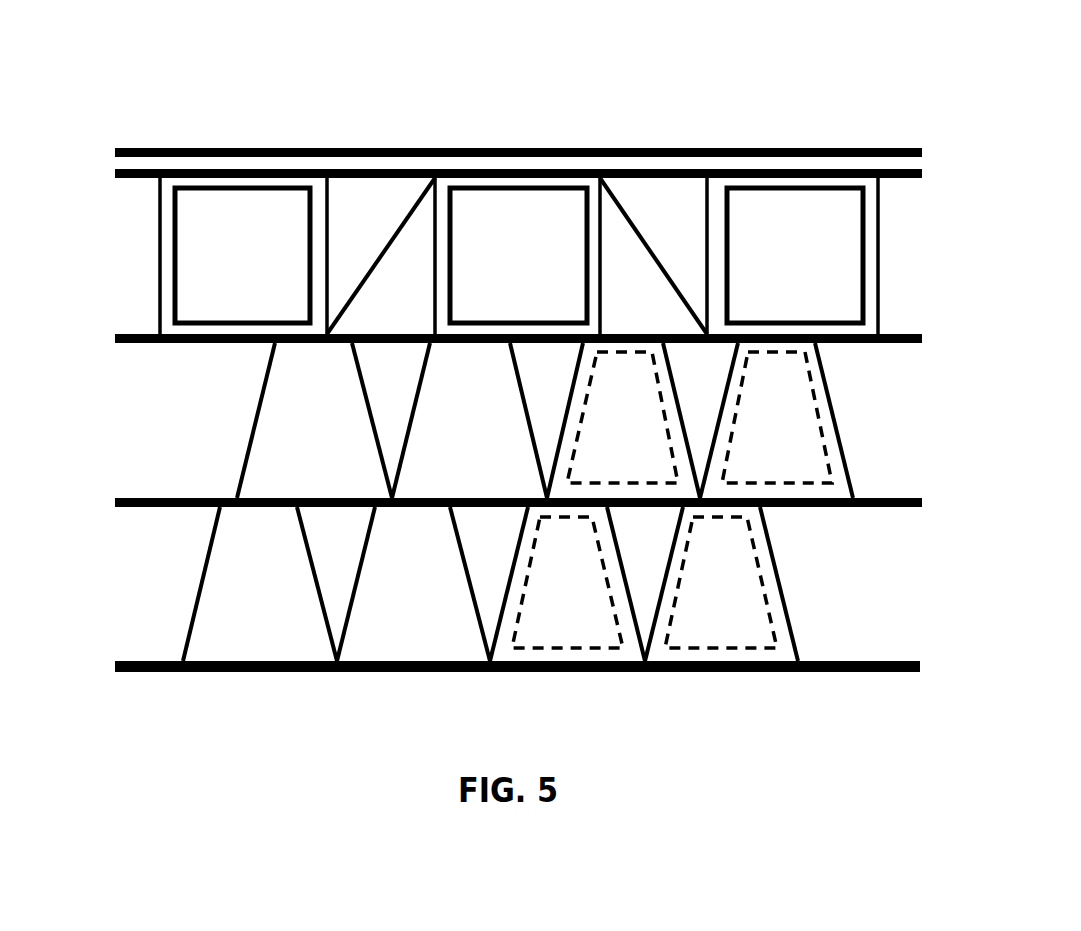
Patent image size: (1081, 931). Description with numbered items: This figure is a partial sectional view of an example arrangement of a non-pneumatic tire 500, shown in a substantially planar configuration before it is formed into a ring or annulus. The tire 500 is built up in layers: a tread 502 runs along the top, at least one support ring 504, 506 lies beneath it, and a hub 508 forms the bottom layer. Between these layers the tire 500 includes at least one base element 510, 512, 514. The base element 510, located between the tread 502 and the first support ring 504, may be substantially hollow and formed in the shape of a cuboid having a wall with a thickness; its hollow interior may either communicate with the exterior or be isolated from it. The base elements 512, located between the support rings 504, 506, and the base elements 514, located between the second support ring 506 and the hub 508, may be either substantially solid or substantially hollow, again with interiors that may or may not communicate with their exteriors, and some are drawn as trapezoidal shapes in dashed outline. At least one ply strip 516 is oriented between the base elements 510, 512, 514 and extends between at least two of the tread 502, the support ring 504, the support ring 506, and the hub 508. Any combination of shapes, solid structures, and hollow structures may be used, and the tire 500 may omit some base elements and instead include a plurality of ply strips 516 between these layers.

The non-pneumatic tire 500 is at (250, 118).
The tread 502 is at (555, 162).
The support ring 504 is at (922, 333).
The support ring 506 is at (922, 498).
The hub 508 is at (920, 663).
The base element 510 is at (723, 183).
The base element 512 is at (443, 401).
The base element 514 is at (405, 558).
The ply strip 516 is at (630, 210).